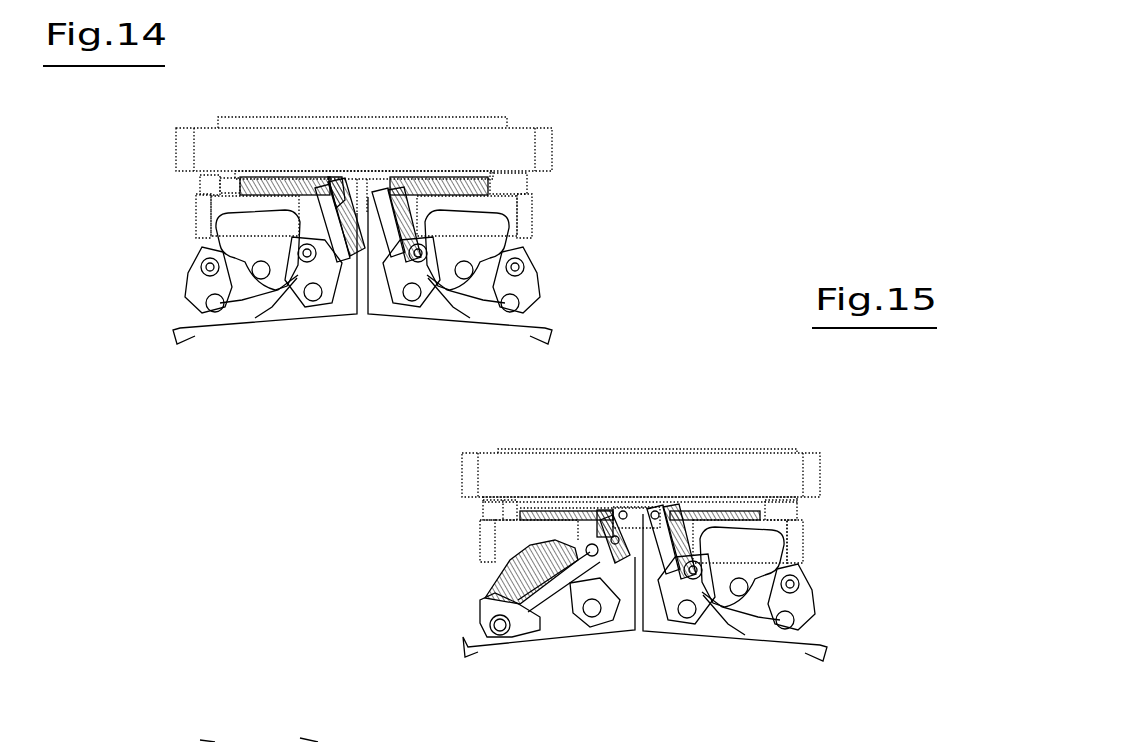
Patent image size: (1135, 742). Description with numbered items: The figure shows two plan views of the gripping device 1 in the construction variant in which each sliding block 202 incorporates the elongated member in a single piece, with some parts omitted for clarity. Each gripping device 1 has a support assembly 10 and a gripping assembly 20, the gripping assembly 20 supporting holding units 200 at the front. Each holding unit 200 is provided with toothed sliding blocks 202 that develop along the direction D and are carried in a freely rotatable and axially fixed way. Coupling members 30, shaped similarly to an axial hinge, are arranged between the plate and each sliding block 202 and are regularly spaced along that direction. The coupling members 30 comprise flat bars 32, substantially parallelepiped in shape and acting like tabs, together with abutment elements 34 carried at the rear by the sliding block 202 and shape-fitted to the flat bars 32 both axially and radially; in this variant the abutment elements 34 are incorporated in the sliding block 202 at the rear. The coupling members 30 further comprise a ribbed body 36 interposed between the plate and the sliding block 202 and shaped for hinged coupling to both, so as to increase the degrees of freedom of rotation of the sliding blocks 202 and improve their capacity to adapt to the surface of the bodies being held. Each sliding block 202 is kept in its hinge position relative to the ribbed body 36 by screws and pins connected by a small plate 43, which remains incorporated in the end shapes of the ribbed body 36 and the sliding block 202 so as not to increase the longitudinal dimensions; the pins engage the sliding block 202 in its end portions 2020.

In FIG. 14, the gripping device 1 is at (492, 57).
In FIG. 15, the gripping device 1 is at (726, 393).
In FIG. 14, the support assembly 10 is at (582, 140).
In FIG. 15, the support assembly 10 is at (837, 425).
In FIG. 14, the gripping assembly 20 is at (569, 240).
In FIG. 15, the gripping assembly 20 is at (831, 483).
In FIG. 14, the coupling members 30 is at (156, 215).
In FIG. 15, the coupling members 30 is at (433, 558).
In FIG. 14, the flat bars 32 is at (205, 200).
In FIG. 15, the flat bars 32 is at (477, 552).
In FIG. 15, the abutment elements 34 is at (192, 736).
In FIG. 14, the ribbed body 36 is at (256, 235).
In FIG. 15, the ribbed body 36 is at (745, 555).
In FIG. 14, the small plate 43 is at (448, 302).
In FIG. 15, the small plate 43 is at (645, 587).
In FIG. 14, the holding unit 200 is at (569, 278).
In FIG. 15, the holding unit 200 is at (847, 581).
In FIG. 14, the sliding block 202 is at (180, 338).
In FIG. 15, the sliding block 202 is at (465, 640).
In FIG. 15, the end portions 2020 is at (308, 741).